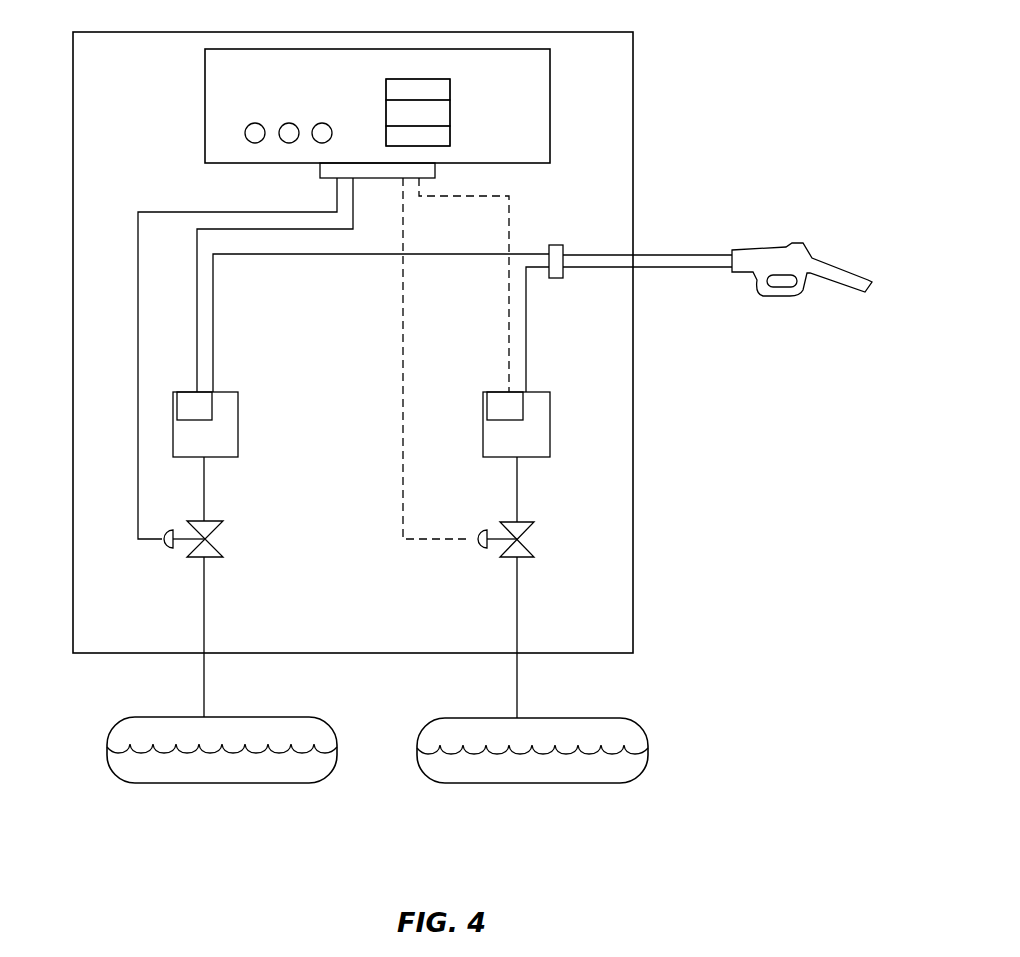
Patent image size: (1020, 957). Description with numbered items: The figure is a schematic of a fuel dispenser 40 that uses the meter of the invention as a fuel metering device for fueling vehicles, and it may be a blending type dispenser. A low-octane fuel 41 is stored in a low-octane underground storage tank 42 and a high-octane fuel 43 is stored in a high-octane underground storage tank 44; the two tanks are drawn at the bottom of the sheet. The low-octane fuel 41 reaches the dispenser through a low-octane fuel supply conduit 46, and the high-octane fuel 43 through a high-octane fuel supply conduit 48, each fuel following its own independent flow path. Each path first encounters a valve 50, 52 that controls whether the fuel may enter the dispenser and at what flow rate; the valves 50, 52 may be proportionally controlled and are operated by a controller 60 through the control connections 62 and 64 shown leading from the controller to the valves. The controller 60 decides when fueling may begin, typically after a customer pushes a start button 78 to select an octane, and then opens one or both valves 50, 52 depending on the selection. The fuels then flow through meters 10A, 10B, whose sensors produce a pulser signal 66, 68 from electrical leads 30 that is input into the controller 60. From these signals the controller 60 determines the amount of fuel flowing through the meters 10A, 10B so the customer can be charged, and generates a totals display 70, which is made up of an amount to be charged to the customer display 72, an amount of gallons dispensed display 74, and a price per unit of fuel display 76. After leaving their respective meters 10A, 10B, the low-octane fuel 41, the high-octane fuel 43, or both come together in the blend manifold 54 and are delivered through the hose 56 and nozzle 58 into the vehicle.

The fuel dispenser 40 is at (572, 32).
The controller 60 is at (552, 102).
The control line 62 is at (170, 210).
The control line 64 is at (402, 505).
The pulser signal 66 is at (197, 277).
The pulser signal 68 is at (510, 218).
The totals display 70 is at (428, 108).
The amount to be charged to the customer display 72 is at (450, 80).
The amount of gallons dispensed display 74 is at (450, 112).
The price per unit of fuel display 76 is at (450, 130).
The start button 78 is at (250, 127).
The meter 10A is at (222, 392).
The meter 10B is at (537, 392).
The electrical leads 30 is at (184, 416).
The valve 50 is at (207, 522).
The valve 52 is at (525, 522).
The low-octane fuel supply conduit 46 is at (200, 703).
The high-octane fuel supply conduit 48 is at (512, 705).
The low-octane underground storage tank 42 is at (108, 745).
The high-octane underground storage tank 44 is at (648, 743).
The low-octane fuel 41 is at (213, 772).
The high-octane fuel 43 is at (516, 773).
The blend manifold 54 is at (557, 243).
The hose 56 is at (675, 254).
The nozzle 58 is at (855, 272).